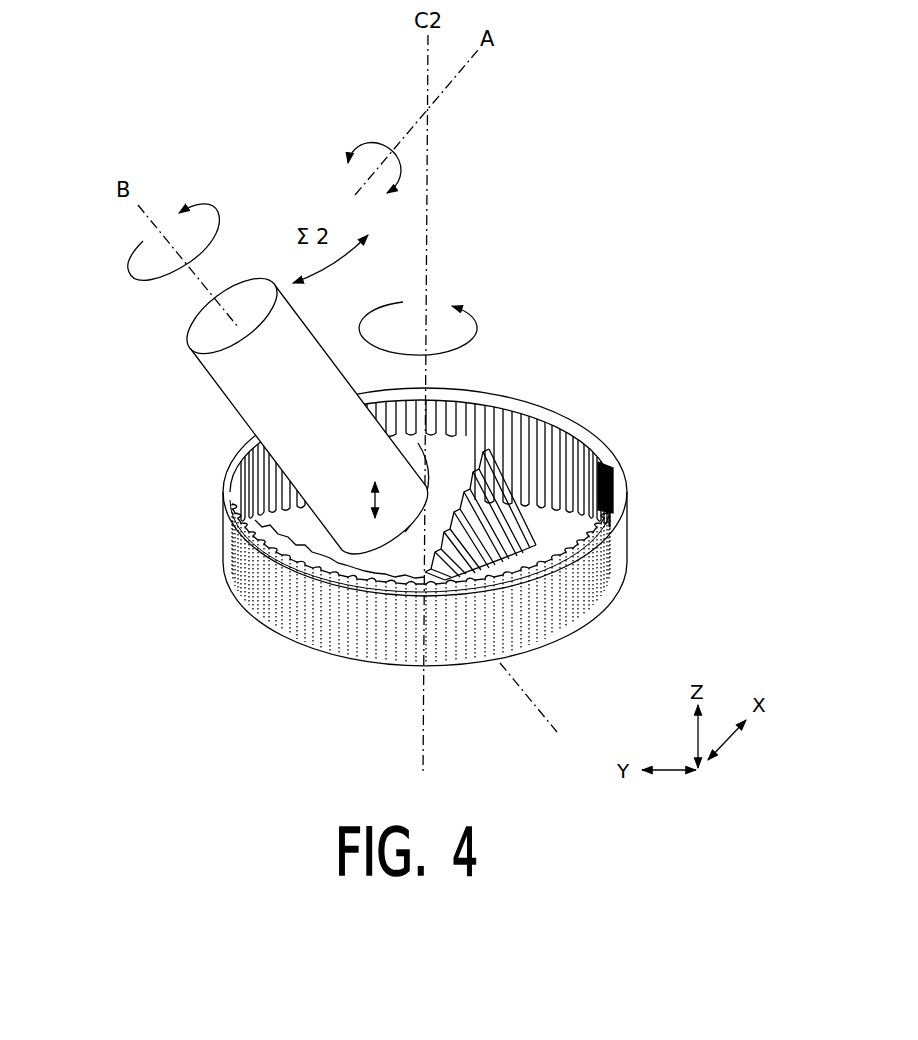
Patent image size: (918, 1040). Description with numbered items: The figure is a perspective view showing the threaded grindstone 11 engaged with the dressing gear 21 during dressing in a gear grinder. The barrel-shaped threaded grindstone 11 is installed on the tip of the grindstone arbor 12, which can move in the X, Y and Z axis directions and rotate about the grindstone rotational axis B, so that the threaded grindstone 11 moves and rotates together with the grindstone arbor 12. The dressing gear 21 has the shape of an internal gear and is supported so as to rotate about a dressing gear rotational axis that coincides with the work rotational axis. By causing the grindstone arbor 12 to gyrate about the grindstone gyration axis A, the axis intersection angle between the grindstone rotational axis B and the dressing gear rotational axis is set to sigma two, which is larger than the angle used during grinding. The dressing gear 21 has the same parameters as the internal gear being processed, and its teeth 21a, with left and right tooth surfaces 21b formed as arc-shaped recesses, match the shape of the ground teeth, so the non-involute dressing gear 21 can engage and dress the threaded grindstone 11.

The threaded grindstone 11 is at (462, 448).
The grindstone arbor 12 is at (246, 392).
The dressing gear 21 is at (496, 508).
The teeth 21a is at (543, 417).
The tooth surfaces 21b is at (548, 426).